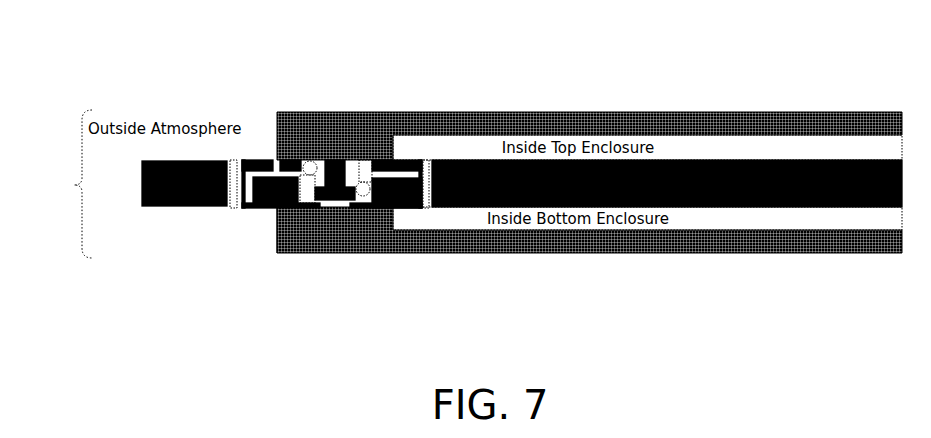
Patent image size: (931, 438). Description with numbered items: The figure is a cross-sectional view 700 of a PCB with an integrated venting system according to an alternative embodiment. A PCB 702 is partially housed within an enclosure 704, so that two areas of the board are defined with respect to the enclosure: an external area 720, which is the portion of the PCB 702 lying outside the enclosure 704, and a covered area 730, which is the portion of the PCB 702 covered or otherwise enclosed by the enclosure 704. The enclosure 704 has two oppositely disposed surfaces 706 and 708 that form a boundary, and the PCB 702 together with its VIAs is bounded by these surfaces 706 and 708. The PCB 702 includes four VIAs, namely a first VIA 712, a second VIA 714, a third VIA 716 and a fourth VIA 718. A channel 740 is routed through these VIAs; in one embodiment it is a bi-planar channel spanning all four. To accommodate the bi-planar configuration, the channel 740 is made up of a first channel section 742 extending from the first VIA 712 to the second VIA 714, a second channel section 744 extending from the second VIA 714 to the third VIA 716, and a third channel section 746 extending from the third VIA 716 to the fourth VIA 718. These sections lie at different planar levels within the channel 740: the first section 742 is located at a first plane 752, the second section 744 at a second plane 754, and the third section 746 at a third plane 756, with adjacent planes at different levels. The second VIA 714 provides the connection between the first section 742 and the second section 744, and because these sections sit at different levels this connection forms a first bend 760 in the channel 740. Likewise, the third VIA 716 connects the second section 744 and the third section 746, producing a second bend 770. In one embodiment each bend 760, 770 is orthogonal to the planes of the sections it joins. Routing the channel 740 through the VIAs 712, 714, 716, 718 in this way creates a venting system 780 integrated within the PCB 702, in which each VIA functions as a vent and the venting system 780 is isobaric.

The cross-sectional view 700 is at (92, 317).
The PCB 702 is at (838, 193).
The enclosure 704 is at (787, 123).
The surface 706 is at (391, 160).
The surface 708 is at (277, 209).
The first VIA 712 is at (237, 209).
The second VIA 714 is at (312, 208).
The third VIA 716 is at (357, 208).
The fourth VIA 718 is at (424, 210).
The external area 720 is at (162, 194).
The covered area 730 is at (720, 193).
The channel 740 is at (270, 160).
The first channel section 742 is at (246, 210).
The second channel section 744 is at (337, 165).
The third channel section 746 is at (390, 208).
The first plane 752 is at (280, 160).
The second plane 754 is at (327, 208).
The third plane 756 is at (403, 160).
The first bend 760 is at (310, 161).
The second bend 770 is at (358, 160).
The venting system 780 is at (74, 185).